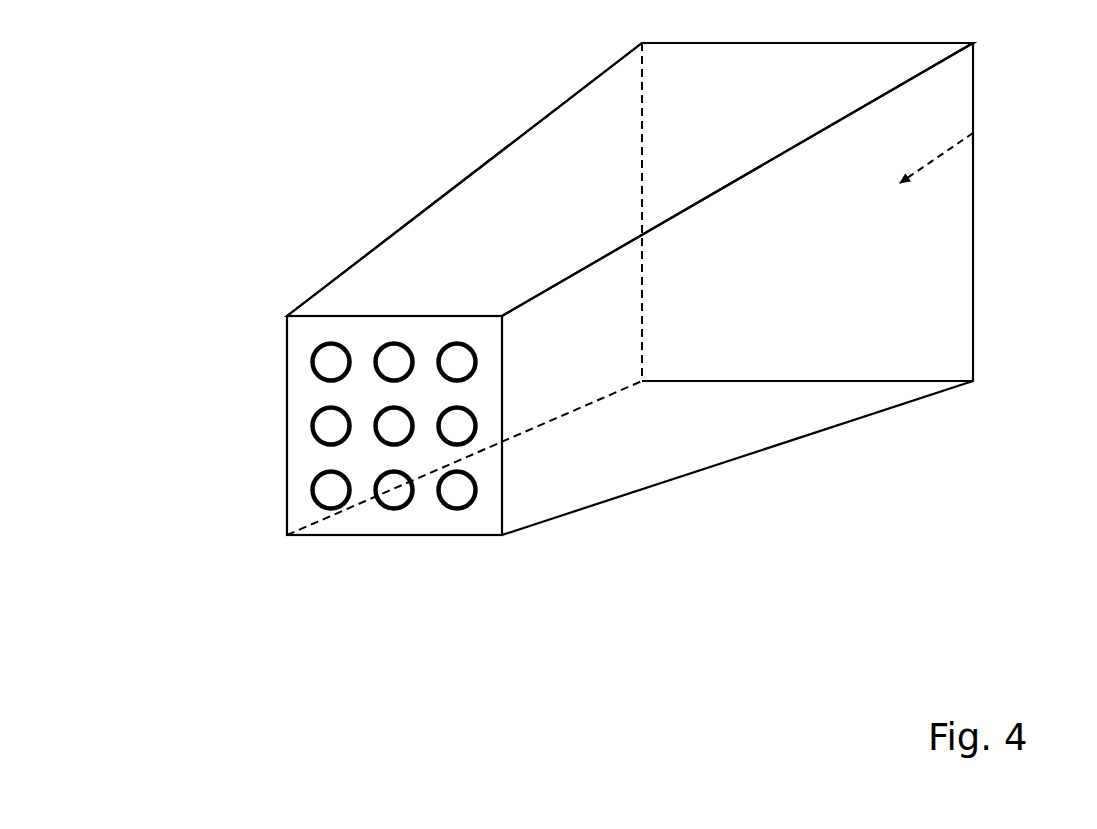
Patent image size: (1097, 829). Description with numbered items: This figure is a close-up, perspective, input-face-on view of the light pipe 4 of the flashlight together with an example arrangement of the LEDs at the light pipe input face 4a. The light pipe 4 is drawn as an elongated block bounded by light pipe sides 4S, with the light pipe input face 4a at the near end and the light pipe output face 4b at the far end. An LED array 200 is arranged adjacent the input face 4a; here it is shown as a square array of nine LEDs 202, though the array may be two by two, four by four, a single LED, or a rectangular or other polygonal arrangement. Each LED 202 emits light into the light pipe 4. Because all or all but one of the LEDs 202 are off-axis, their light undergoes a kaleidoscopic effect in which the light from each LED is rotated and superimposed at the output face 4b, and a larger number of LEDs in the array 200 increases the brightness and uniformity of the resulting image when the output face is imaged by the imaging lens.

The light pipe 4 is at (322, 174).
The light pipe side 4S is at (578, 173).
The light pipe input face 4a is at (477, 522).
The light pipe output face 4b is at (973, 133).
The LED array 200 is at (256, 434).
The LED 202 is at (323, 497).